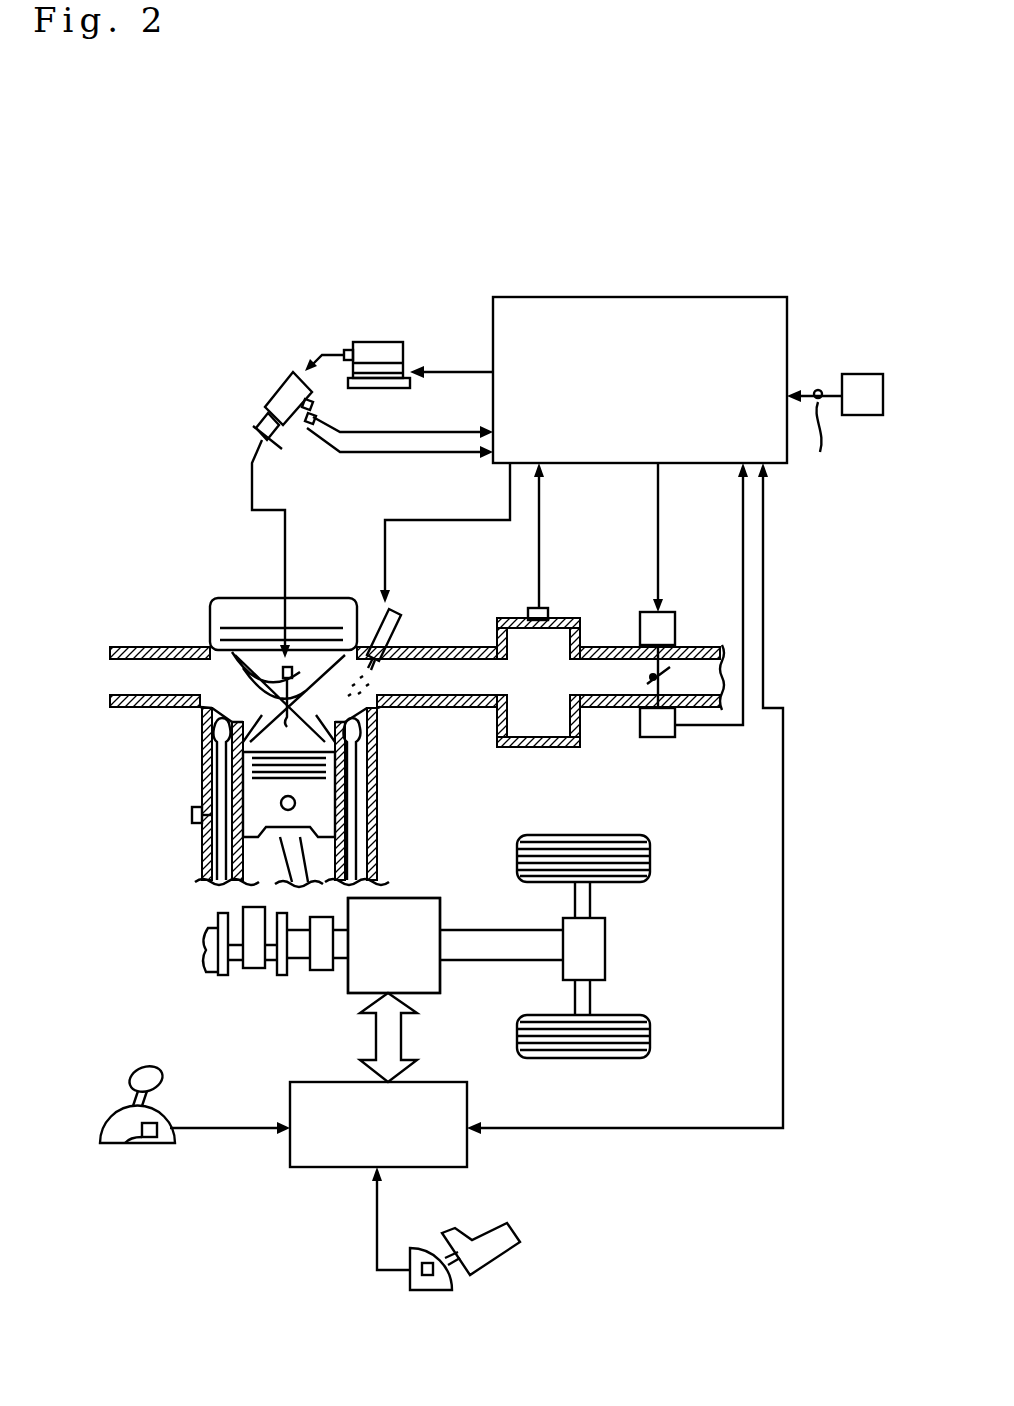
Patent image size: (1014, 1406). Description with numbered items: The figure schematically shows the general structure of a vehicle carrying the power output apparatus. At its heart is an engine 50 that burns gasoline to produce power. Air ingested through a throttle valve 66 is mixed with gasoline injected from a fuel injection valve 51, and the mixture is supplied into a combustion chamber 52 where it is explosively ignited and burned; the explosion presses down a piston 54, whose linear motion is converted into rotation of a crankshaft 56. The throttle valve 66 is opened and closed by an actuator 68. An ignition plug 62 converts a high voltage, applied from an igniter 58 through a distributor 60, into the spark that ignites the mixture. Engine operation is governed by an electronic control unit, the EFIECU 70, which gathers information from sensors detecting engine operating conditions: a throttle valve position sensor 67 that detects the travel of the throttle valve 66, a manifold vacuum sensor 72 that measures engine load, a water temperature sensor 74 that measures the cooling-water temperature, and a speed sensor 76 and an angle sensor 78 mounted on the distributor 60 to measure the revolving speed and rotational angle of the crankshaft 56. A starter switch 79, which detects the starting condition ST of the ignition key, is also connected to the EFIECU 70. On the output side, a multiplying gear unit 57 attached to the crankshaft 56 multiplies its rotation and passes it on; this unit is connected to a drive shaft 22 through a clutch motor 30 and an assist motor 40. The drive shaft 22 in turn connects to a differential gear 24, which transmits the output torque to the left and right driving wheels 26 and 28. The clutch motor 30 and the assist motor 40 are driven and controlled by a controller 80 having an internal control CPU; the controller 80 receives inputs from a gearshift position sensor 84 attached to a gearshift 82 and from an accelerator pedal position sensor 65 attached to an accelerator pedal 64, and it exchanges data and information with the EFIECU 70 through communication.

The drive shaft 22 is at (477, 963).
The differential gear 24 is at (607, 950).
The driving wheel 26 is at (650, 1033).
The driving wheel 28 is at (650, 863).
The clutch motor 30 is at (347, 998).
The assist motor 40 is at (394, 945).
The engine 50 is at (170, 620).
The fuel injection valve 51 is at (400, 623).
The combustion chamber 52 is at (250, 742).
The piston 54 is at (327, 803).
The crankshaft 56 is at (210, 950).
The multiplying gear unit 57 is at (320, 972).
The igniter 58 is at (380, 342).
The distributor 60 is at (277, 395).
The ignition plug 62 is at (302, 709).
The accelerator pedal 64 is at (467, 1275).
The accelerator pedal position sensor 65 is at (423, 1292).
The throttle valve 66 is at (633, 690).
The throttle valve position sensor 67 is at (663, 737).
The actuator 68 is at (677, 623).
The electronic control unit (EFIECU) 70 is at (710, 297).
The manifold vacuum sensor 72 is at (547, 608).
The water temperature sensor 74 is at (197, 828).
The speed sensor 76 is at (320, 405).
The angle sensor 78 is at (303, 425).
The starter switch 79 is at (867, 417).
The controller 80 is at (468, 1153).
The gearshift 82 is at (110, 1116).
The gearshift position sensor 84 is at (122, 1144).